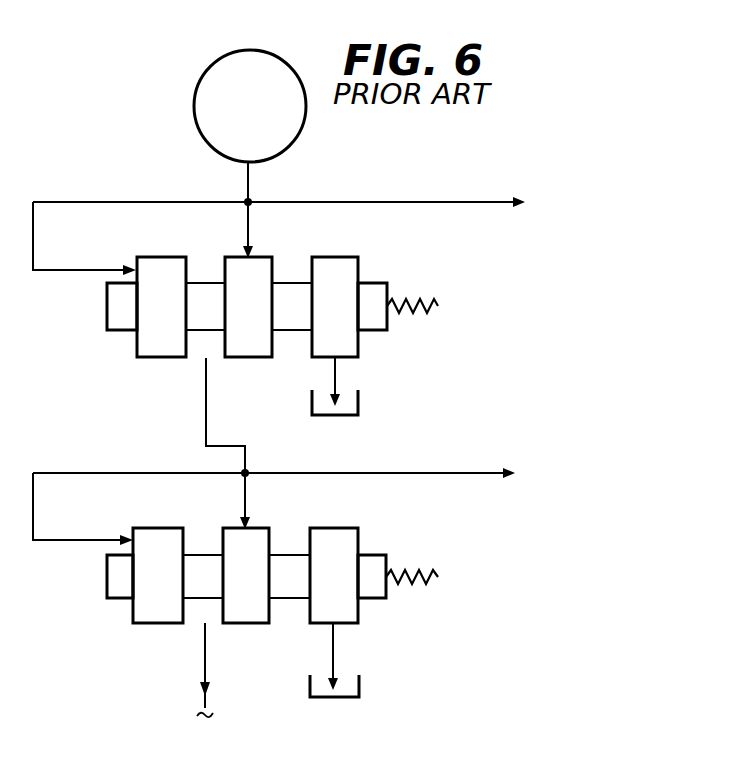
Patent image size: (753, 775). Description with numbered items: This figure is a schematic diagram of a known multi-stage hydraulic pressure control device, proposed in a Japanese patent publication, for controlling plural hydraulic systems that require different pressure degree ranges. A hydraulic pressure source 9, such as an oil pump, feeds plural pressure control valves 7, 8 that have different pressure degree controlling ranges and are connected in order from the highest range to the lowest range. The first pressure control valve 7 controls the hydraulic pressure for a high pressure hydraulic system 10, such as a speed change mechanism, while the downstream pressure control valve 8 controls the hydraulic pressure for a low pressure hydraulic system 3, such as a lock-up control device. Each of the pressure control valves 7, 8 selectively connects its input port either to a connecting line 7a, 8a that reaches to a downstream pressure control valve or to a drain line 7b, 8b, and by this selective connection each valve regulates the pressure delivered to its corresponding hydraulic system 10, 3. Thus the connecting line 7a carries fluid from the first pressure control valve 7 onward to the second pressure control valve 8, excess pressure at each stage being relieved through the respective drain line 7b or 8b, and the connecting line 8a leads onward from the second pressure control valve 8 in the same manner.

The hydraulic pressure source 9 is at (194, 95).
The high pressure hydraulic system 10 is at (402, 202).
The pressure control valve 7 is at (107, 318).
The connecting line 7a is at (206, 400).
The drain line 7b is at (335, 372).
The low pressure hydraulic system 3 is at (385, 473).
The pressure control valve 8 is at (107, 583).
The connecting line 8a is at (205, 660).
The drain line 8b is at (333, 650).